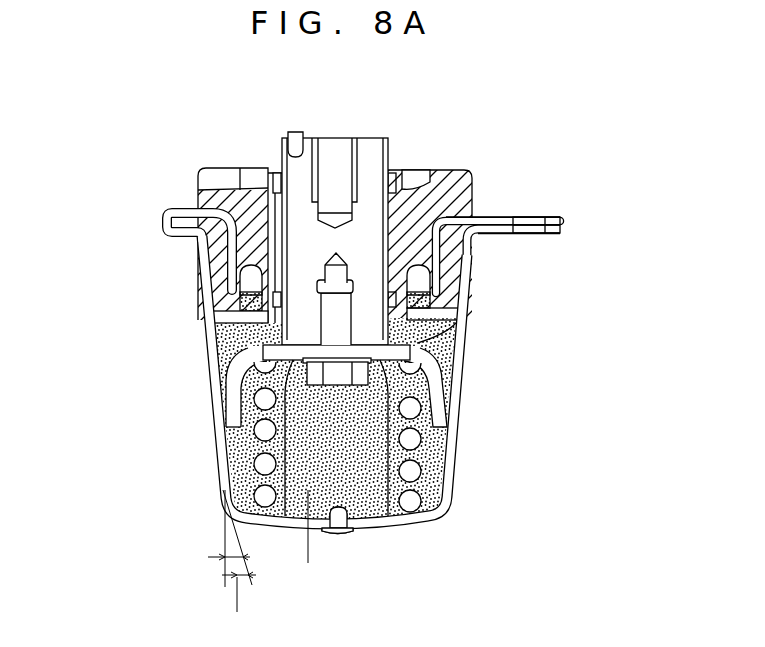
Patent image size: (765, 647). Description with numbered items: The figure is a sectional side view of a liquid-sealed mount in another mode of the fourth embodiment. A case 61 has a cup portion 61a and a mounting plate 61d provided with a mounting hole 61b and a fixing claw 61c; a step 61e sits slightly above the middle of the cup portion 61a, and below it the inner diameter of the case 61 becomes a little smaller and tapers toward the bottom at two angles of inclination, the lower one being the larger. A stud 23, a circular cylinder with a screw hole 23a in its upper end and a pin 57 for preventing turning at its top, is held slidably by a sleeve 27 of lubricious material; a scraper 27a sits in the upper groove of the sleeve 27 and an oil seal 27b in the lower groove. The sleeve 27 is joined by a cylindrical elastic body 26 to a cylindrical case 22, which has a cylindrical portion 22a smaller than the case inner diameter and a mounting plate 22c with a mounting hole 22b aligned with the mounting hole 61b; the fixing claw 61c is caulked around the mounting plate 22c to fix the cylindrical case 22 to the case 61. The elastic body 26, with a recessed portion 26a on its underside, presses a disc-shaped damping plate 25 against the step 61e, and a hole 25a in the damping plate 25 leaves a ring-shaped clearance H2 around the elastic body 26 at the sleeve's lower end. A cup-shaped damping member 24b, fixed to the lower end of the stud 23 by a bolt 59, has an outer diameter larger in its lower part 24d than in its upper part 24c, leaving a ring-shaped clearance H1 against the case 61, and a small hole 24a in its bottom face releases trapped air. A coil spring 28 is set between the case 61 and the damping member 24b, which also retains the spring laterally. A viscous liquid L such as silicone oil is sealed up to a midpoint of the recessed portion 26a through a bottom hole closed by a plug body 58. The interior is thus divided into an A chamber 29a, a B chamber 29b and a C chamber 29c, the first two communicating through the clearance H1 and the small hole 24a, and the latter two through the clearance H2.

The cylindrical case 22 is at (422, 190).
The cylindrical portion 22a is at (443, 265).
The mounting hole 22b is at (537, 217).
The mounting plate 22c is at (508, 217).
The stud 23 is at (373, 147).
The screw hole 23a is at (358, 164).
The small hole 24a is at (380, 492).
The damping member 24b is at (440, 408).
The upper part 24c is at (240, 370).
The lower part 24d is at (227, 420).
The damping plate 25 is at (217, 315).
The hole 25a is at (222, 326).
The cylindrical elastic body 26 is at (467, 197).
The recessed portion 26a is at (247, 294).
The sleeve 27 is at (238, 192).
The scraper 27a is at (277, 175).
The oil seal 27b is at (214, 262).
The coil spring 28 is at (414, 443).
The A chamber 29a is at (252, 452).
The B chamber 29b is at (247, 338).
The C chamber 29c is at (245, 304).
The pin 57 is at (296, 131).
The plug body 58 is at (340, 535).
The bolt 59 is at (287, 520).
The case 61 is at (443, 512).
The cup portion 61a is at (458, 477).
The mounting hole 61b is at (533, 237).
The fixing claw 61c is at (167, 212).
The mounting plate 61d is at (503, 238).
The step 61e is at (473, 323).
The ring-shaped clearance H1 is at (452, 385).
The ring-shaped clearance H2 is at (455, 340).
The viscous liquid L is at (303, 542).